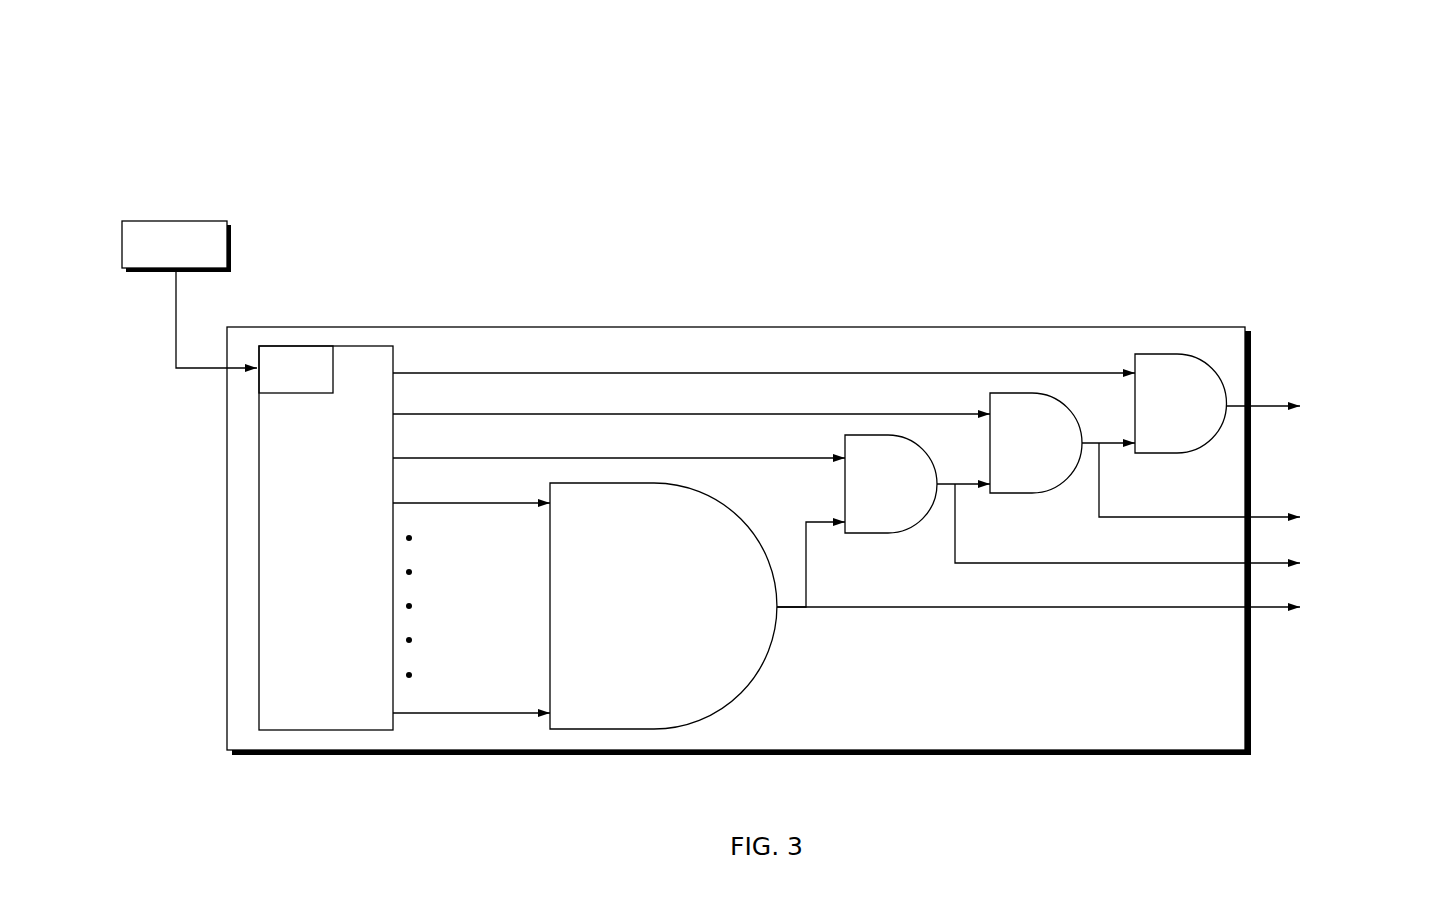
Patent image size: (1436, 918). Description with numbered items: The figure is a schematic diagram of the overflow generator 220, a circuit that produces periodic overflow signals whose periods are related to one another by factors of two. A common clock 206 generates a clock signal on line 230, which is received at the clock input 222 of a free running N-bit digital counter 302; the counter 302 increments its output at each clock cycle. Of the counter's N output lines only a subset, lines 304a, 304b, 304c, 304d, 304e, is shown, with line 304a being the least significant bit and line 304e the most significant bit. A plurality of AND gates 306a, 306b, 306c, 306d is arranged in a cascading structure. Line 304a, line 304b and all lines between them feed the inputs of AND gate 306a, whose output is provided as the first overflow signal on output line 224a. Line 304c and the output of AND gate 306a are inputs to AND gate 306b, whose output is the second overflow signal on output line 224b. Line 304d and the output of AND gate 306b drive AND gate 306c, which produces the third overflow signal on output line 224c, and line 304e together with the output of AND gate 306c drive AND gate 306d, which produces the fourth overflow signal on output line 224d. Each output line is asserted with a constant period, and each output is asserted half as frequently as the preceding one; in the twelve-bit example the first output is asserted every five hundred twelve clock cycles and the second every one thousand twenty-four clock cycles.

The common clock 206 is at (172, 221).
The clock signal line 230 is at (176, 326).
The overflow generator 220 is at (583, 327).
The free running N-bit digital counter 302 is at (259, 465).
The clock input 222 is at (272, 394).
The output line 304a is at (474, 714).
The output line 304b is at (438, 504).
The output line 304c is at (583, 458).
The output line 304d is at (785, 414).
The output line 304e is at (990, 373).
The AND gate 306a is at (663, 606).
The AND gate 306b is at (857, 521).
The AND gate 306c is at (1009, 443).
The AND gate 306d is at (1154, 403).
The output line 224a is at (1257, 607).
The output line 224b is at (1262, 563).
The output line 224c is at (1257, 517).
The output line 224d is at (1255, 406).